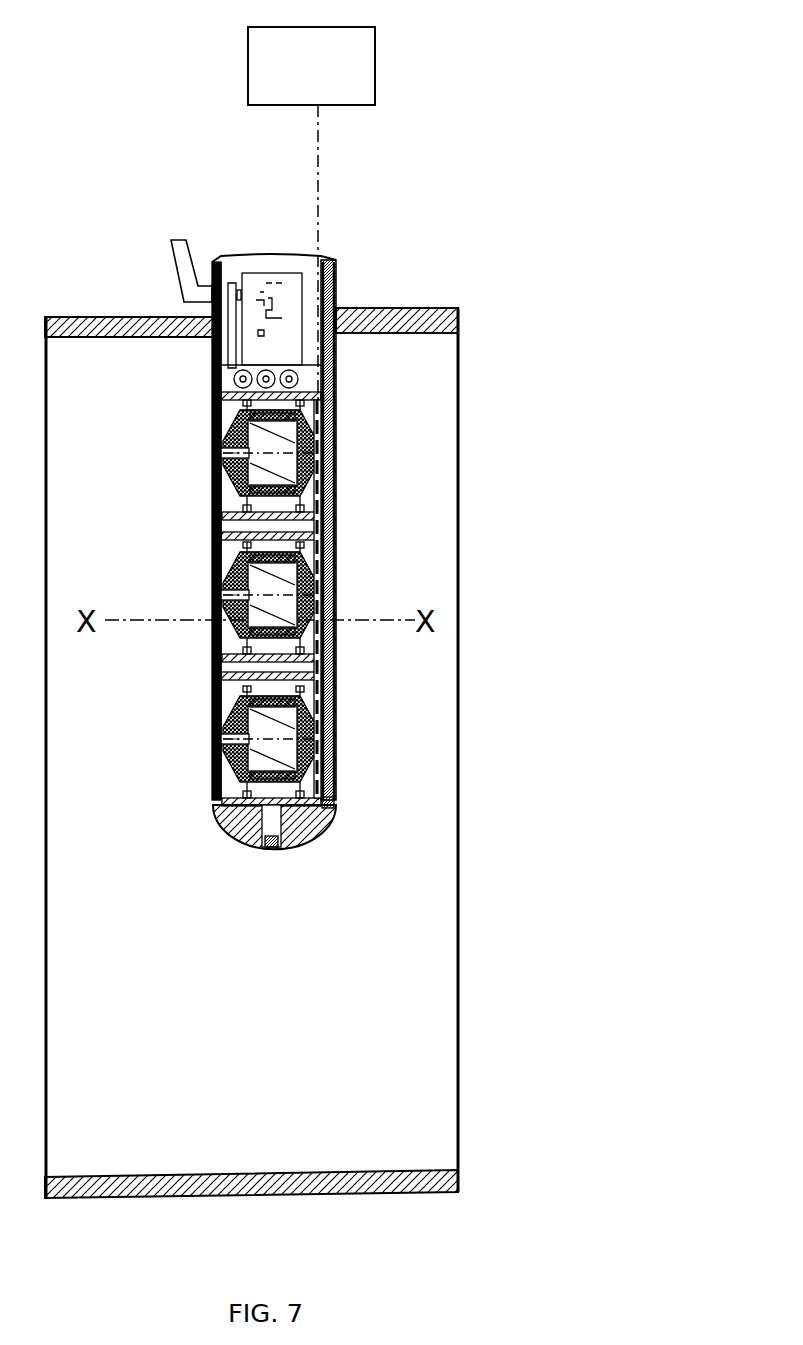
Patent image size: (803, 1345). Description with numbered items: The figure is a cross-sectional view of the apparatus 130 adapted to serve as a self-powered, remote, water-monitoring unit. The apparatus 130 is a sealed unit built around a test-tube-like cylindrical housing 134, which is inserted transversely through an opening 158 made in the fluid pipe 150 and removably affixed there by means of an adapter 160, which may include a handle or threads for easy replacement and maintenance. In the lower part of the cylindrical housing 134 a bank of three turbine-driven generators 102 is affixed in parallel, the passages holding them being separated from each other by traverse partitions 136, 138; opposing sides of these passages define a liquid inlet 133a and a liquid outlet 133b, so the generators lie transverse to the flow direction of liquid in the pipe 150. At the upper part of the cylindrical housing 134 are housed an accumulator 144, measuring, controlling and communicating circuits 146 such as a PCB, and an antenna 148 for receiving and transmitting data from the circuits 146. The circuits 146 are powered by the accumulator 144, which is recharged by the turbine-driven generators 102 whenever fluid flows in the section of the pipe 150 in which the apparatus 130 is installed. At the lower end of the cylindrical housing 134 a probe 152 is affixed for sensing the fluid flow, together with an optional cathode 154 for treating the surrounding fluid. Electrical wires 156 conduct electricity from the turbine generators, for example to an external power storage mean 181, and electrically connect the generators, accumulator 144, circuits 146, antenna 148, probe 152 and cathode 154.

The external power storage mean 181 is at (248, 76).
The apparatus 130 is at (253, 521).
The adapter 160 is at (172, 248).
The antenna 148 is at (224, 262).
The opening 158 is at (322, 263).
The measuring, controlling and communicating circuits 146 is at (294, 313).
The fluid pipe 150 is at (90, 310).
The cylindrical housing 134 is at (218, 378).
The accumulator 144 is at (303, 381).
The traverse partition 136 is at (245, 406).
The turbine-driven generator 102 is at (353, 456).
The liquid outlet 133b is at (340, 493).
The traverse partition 138 is at (237, 500).
The liquid inlet 133a is at (214, 686).
The electrical wires 156 is at (333, 660).
The cathode 154 is at (308, 838).
The probe 152 is at (253, 843).